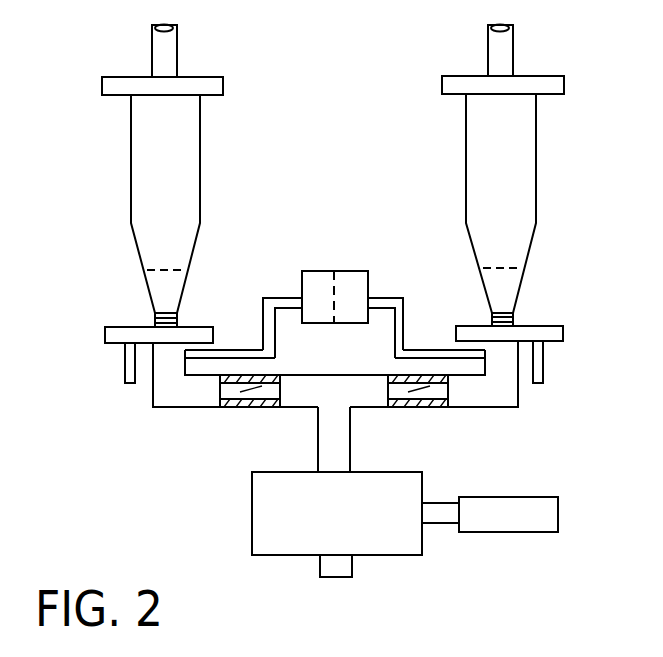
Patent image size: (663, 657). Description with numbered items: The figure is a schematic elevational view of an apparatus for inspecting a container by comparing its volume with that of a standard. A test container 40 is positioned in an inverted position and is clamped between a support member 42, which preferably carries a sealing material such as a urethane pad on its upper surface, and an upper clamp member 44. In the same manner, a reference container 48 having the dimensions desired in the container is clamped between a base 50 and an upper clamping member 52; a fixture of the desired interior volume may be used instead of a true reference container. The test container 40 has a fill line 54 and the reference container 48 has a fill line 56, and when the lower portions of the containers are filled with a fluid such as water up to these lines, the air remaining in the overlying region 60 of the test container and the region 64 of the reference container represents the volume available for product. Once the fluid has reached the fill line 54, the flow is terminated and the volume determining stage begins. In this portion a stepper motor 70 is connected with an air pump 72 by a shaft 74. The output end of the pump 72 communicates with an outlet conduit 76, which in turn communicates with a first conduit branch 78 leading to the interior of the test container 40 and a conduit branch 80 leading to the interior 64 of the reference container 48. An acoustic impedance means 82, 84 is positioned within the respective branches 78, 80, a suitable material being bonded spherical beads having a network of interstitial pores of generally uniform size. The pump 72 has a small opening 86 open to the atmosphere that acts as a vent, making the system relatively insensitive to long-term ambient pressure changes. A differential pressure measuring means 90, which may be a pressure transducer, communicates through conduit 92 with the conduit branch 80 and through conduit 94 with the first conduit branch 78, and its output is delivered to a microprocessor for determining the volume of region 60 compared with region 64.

The test container 40 is at (537, 202).
The support member 42 is at (547, 326).
The upper clamp member 44 is at (545, 76).
The reference container 48 is at (131, 183).
The base 50 is at (120, 327).
The upper clamping member 52 is at (102, 79).
The fill line 54 is at (523, 258).
The fill line 56 is at (173, 263).
The container interior region 60 is at (522, 134).
The reference container interior region 64 is at (188, 152).
The stepper motor 70 is at (530, 532).
The air pump 72 is at (252, 520).
The shaft 74 is at (440, 523).
The outlet conduit 76 is at (328, 457).
The first conduit branch 78 is at (503, 403).
The conduit branch 80 is at (153, 388).
The acoustic impedance means 82 is at (427, 407).
The acoustic impedance means 84 is at (240, 410).
The small opening 86 is at (320, 567).
The differential pressure measuring means 90 is at (352, 271).
The conduit 92 is at (282, 298).
The conduit 94 is at (423, 350).